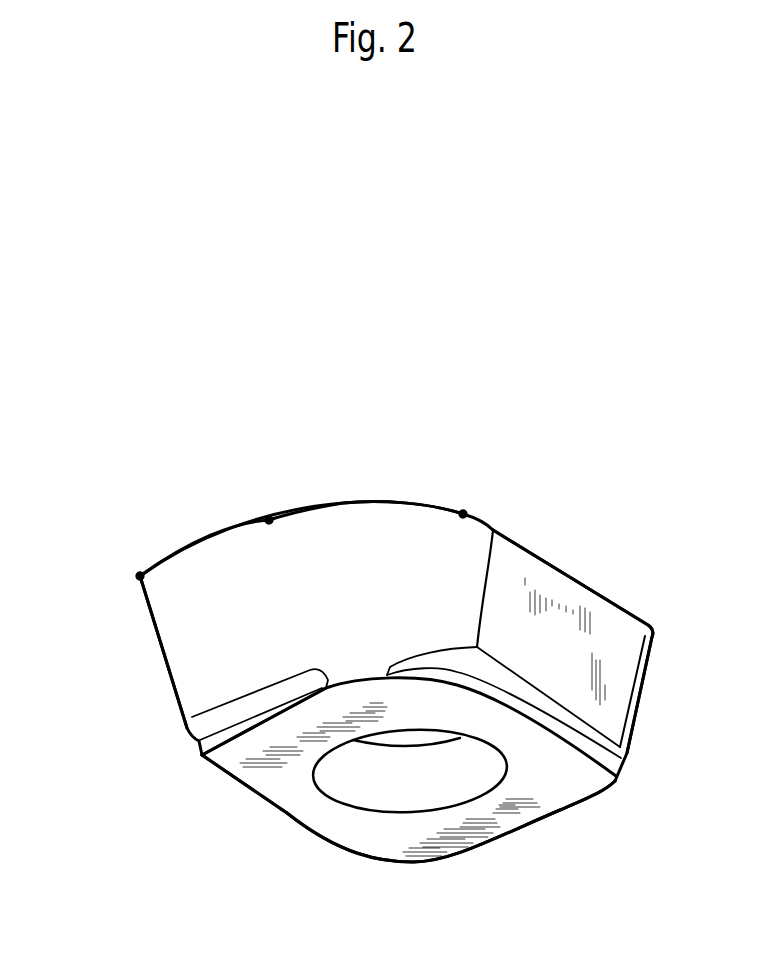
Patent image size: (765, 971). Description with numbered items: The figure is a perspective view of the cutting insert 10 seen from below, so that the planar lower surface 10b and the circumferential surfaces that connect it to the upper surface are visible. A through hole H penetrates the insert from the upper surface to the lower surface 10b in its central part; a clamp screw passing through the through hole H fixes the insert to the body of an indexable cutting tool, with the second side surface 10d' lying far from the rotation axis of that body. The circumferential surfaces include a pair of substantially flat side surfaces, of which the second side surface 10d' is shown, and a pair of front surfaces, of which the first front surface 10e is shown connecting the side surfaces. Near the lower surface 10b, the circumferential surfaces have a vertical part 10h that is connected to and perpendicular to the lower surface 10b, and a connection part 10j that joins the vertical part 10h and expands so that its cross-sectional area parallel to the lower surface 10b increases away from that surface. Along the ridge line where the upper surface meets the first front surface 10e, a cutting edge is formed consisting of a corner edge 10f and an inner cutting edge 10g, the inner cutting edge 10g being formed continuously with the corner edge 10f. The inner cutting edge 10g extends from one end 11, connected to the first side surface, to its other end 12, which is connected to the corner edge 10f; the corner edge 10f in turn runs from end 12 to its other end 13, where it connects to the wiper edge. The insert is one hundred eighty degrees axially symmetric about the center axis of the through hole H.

The cutting insert 10 is at (526, 491).
The lower surface 10b is at (548, 807).
The second side surface 10d' is at (610, 641).
The first front surface 10e is at (200, 630).
The corner edge 10f is at (343, 503).
The inner cutting edge 10g is at (192, 543).
The vertical part 10h is at (223, 737).
The connection part 10j is at (193, 747).
The one end of the inner cutting edge 11 is at (138, 575).
The other end of the inner cutting edge 12 is at (268, 518).
The other end of the corner edge 13 is at (463, 512).
The through hole H is at (352, 787).